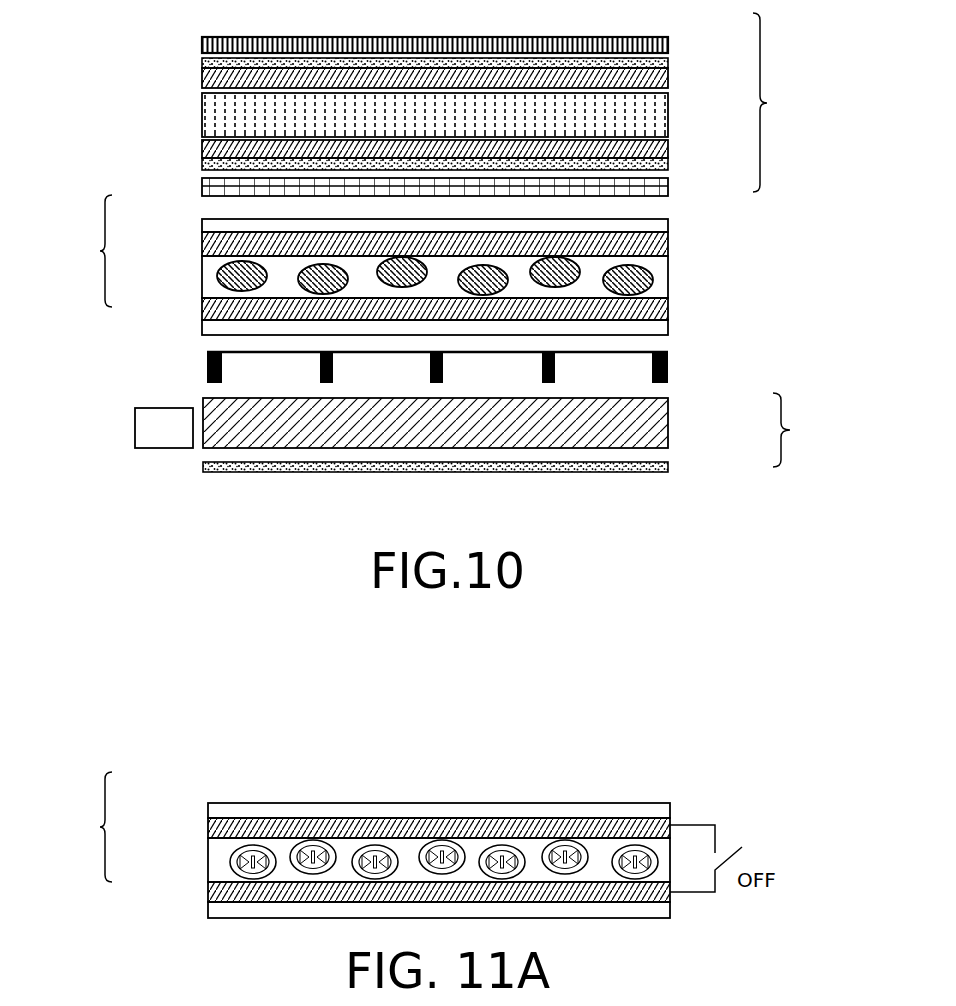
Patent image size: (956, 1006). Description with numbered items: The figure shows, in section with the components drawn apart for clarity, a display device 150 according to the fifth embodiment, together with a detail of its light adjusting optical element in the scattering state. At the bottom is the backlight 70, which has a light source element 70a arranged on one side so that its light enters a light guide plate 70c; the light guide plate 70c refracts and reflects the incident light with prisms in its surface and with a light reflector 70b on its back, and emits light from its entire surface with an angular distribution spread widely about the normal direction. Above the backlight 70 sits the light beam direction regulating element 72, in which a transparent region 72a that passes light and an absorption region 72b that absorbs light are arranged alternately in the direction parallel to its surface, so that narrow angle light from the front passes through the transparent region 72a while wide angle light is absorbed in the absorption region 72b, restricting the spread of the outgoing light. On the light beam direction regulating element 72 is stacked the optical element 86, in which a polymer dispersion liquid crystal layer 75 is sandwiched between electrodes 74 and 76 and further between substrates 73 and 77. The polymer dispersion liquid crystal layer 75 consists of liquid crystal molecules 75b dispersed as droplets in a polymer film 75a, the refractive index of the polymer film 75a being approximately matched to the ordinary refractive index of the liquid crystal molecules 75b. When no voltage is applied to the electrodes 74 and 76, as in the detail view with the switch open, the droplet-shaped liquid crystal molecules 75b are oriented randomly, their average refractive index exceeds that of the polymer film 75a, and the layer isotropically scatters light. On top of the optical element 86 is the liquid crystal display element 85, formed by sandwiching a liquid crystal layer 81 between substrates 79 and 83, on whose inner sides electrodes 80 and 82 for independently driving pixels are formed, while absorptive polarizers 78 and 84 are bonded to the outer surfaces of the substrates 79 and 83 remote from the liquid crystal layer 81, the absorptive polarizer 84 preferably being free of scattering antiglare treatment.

In FIG. 10, the display device 150 is at (792, 202).
In FIG. 10, the liquid crystal display element 85 is at (782, 102).
In FIG. 10, the absorptive polarizer 84 is at (668, 40).
In FIG. 10, the substrate 83 is at (202, 64).
In FIG. 10, the upper electrode layer 82 is at (665, 80).
In FIG. 10, the liquid crystal layer 81 is at (213, 112).
In FIG. 10, the electrode 80 is at (668, 147).
In FIG. 10, the substrate 79 is at (202, 168).
In FIG. 10, the absorptive polarizer 78 is at (668, 185).
In FIG. 10, the optical element 86 is at (84, 251).
In FIG. 11A, the optical element 86 is at (84, 827).
In FIG. 10, the substrate 77 is at (207, 224).
In FIG. 11A, the substrate 77 is at (215, 810).
In FIG. 10, the electrode 76 is at (662, 245).
In FIG. 11A, the electrode 76 is at (605, 832).
In FIG. 10, the polymer dispersion liquid crystal layer 75 is at (443, 263).
In FIG. 11A, the polymer dispersion liquid crystal layer 75 is at (394, 811).
In FIG. 10, the polymer film 75a is at (209, 262).
In FIG. 11A, the polymer film 75a is at (212, 850).
In FIG. 10, the liquid crystal molecules 75b is at (214, 271).
In FIG. 11A, the liquid crystal molecules 75b is at (230, 853).
In FIG. 10, the electrode 74 is at (662, 310).
In FIG. 11A, the electrode 74 is at (220, 892).
In FIG. 10, the substrate 73 is at (662, 324).
In FIG. 11A, the substrate 73 is at (212, 910).
In FIG. 10, the light beam direction regulating element 72 is at (437, 352).
In FIG. 10, the transparent region 72a is at (243, 365).
In FIG. 10, the absorption region 72b is at (207, 360).
In FIG. 10, the backlight 70 is at (431, 466).
In FIG. 10, the light source element 70a is at (145, 428).
In FIG. 10, the light reflector 70b is at (290, 474).
In FIG. 10, the light guide plate 70c is at (668, 422).